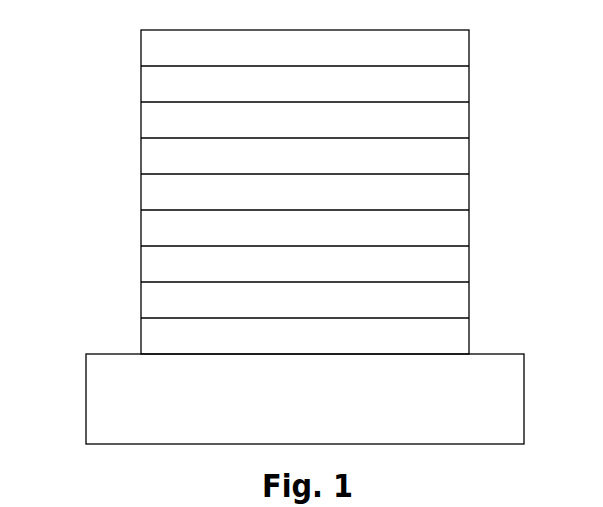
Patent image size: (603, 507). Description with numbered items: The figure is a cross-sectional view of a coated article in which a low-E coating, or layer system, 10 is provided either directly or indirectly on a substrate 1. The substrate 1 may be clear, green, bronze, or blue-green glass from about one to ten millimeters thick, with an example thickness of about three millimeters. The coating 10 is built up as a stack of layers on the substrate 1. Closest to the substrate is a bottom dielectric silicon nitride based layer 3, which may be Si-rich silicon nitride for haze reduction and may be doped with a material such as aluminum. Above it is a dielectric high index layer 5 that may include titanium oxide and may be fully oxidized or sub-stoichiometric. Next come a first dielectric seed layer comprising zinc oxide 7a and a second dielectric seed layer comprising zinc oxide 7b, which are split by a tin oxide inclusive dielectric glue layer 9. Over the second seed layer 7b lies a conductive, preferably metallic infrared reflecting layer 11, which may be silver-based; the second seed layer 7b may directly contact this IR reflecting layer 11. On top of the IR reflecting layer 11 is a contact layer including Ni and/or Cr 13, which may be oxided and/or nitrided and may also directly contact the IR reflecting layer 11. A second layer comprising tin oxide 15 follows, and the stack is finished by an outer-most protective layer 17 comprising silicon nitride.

The substrate 1 is at (524, 399).
The bottom dielectric silicon nitride based layer 3 is at (469, 336).
The dielectric high index layer 5 is at (469, 300).
The first dielectric seed layer comprising zinc oxide 7a is at (469, 264).
The second dielectric seed layer comprising zinc oxide 7b is at (469, 192).
The tin oxide inclusive dielectric glue layer 9 is at (469, 228).
The low-E coating 10 is at (68, 30).
The infrared (IR) reflecting layer 11 is at (469, 156).
The contact layer including Ni and/or Cr 13 is at (469, 120).
The second layer comprising tin oxide 15 is at (469, 84).
The outer-most protective layer 17 is at (469, 48).